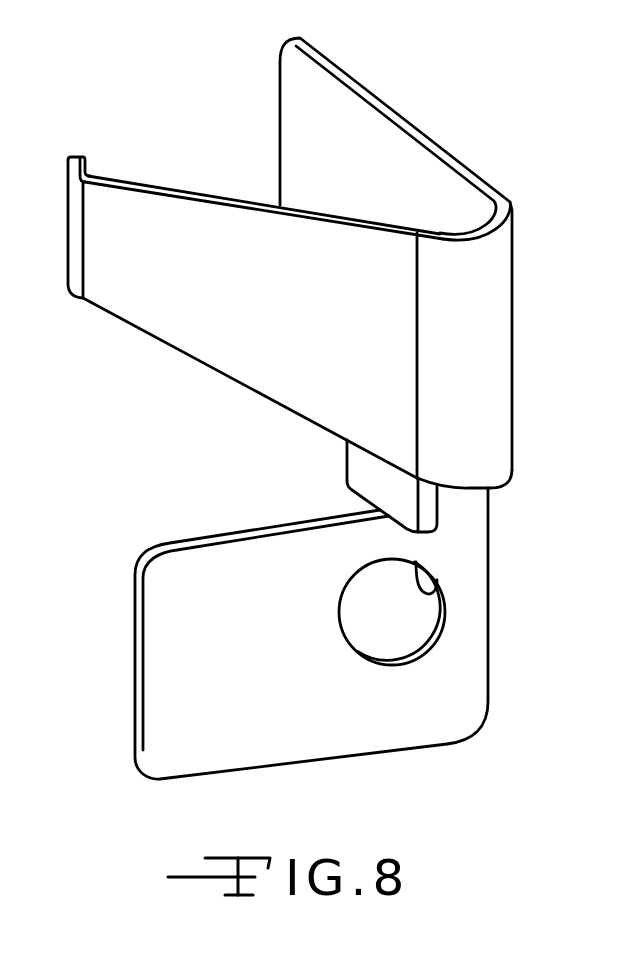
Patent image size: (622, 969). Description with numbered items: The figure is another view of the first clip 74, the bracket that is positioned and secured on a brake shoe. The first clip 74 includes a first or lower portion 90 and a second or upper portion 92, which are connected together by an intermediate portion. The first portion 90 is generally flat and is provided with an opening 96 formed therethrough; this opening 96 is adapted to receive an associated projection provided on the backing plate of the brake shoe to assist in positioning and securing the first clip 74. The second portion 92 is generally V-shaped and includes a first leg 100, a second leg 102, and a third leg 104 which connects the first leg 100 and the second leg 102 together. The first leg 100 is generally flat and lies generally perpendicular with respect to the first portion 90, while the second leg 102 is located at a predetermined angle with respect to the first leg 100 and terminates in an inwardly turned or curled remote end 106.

The first clip 74 is at (339, 629).
The first portion 90 is at (442, 748).
The second portion 92 is at (338, 285).
The opening 96 is at (433, 593).
The first leg 100 is at (404, 106).
The second leg 102 is at (177, 320).
The third leg 104 is at (477, 363).
The remote end 106 is at (82, 153).